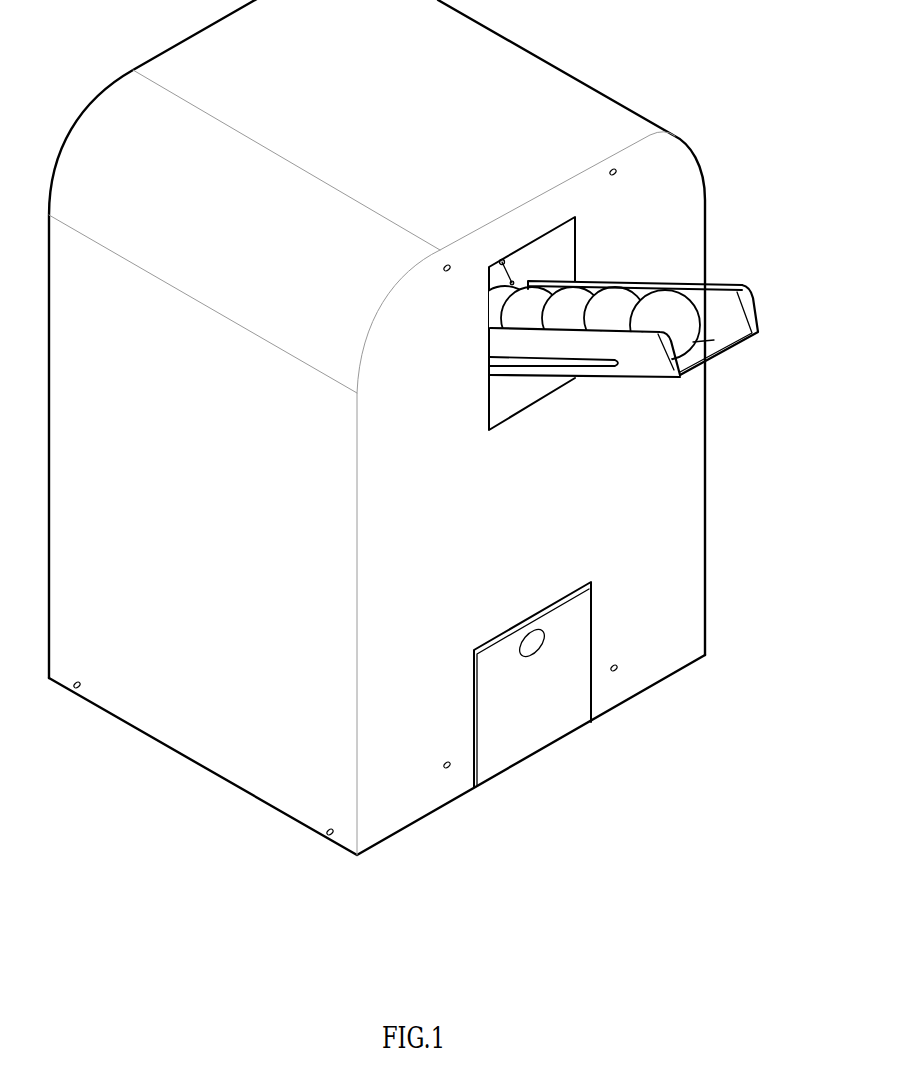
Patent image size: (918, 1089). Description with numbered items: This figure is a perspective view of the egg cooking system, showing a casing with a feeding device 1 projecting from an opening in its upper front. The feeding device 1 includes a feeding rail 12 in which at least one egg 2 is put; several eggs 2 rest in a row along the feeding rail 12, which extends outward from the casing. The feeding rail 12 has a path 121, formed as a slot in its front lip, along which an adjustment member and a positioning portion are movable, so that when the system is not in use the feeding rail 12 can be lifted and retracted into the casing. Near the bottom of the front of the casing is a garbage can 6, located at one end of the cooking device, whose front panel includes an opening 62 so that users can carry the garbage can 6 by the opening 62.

The feeding device 1 is at (763, 237).
The feeding rail 12 is at (658, 362).
The path 121 is at (598, 364).
The egg 2 is at (687, 330).
The garbage can 6 is at (589, 704).
The opening 62 is at (520, 657).